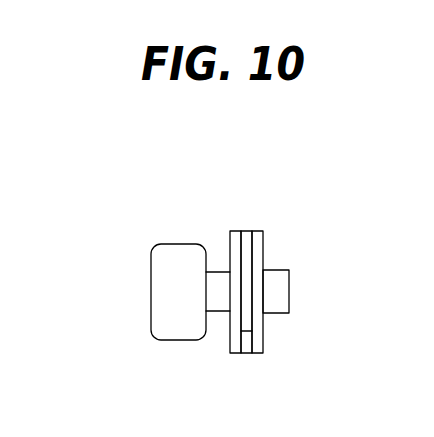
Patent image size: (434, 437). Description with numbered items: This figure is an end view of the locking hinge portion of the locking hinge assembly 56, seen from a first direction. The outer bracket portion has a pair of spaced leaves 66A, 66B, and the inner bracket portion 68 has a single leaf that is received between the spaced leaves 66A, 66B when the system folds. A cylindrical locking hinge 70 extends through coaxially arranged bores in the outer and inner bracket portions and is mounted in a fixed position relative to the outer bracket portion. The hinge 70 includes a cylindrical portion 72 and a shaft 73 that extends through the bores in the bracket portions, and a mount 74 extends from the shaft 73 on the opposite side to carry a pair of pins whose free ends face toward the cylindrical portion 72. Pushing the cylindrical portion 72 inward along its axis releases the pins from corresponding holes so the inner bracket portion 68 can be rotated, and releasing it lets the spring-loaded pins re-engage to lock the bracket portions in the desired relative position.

The locking hinge assembly 56 is at (147, 181).
The cylindrical locking hinge 70 is at (118, 270).
The cylindrical portion 72 is at (175, 267).
The shaft 73 is at (220, 298).
The leaf 66A is at (232, 248).
The leaf 66B is at (258, 253).
The inner bracket portion 68 is at (247, 245).
The mount 74 is at (275, 302).